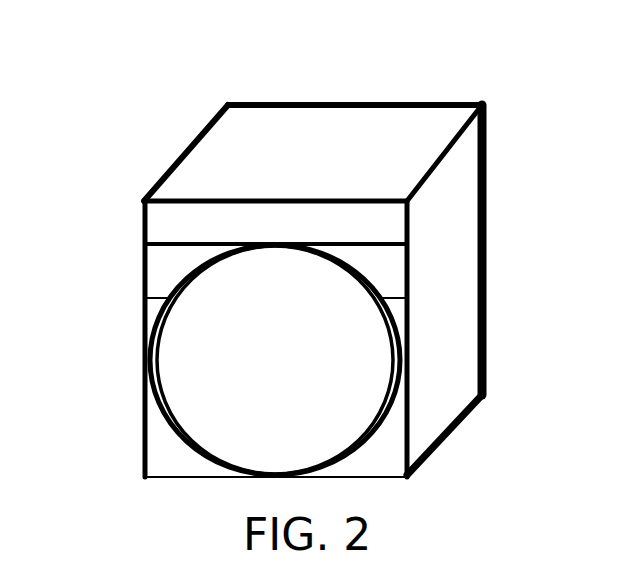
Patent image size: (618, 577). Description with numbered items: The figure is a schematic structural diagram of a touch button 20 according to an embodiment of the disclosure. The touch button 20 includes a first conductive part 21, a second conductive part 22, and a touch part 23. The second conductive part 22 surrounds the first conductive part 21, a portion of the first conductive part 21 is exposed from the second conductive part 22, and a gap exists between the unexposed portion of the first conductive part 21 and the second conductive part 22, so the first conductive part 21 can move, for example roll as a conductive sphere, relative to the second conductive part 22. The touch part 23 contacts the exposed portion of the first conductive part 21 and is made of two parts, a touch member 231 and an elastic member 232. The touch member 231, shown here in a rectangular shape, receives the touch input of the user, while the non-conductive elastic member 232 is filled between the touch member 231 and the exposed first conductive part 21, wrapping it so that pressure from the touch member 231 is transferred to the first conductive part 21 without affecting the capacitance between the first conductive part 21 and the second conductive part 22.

The touch button 20 is at (110, 75).
The first conductive part 21 is at (200, 303).
The second conductive part 22 is at (158, 444).
The touch part 23 is at (152, 181).
The touch member 231 is at (380, 223).
The elastic member 232 is at (378, 275).